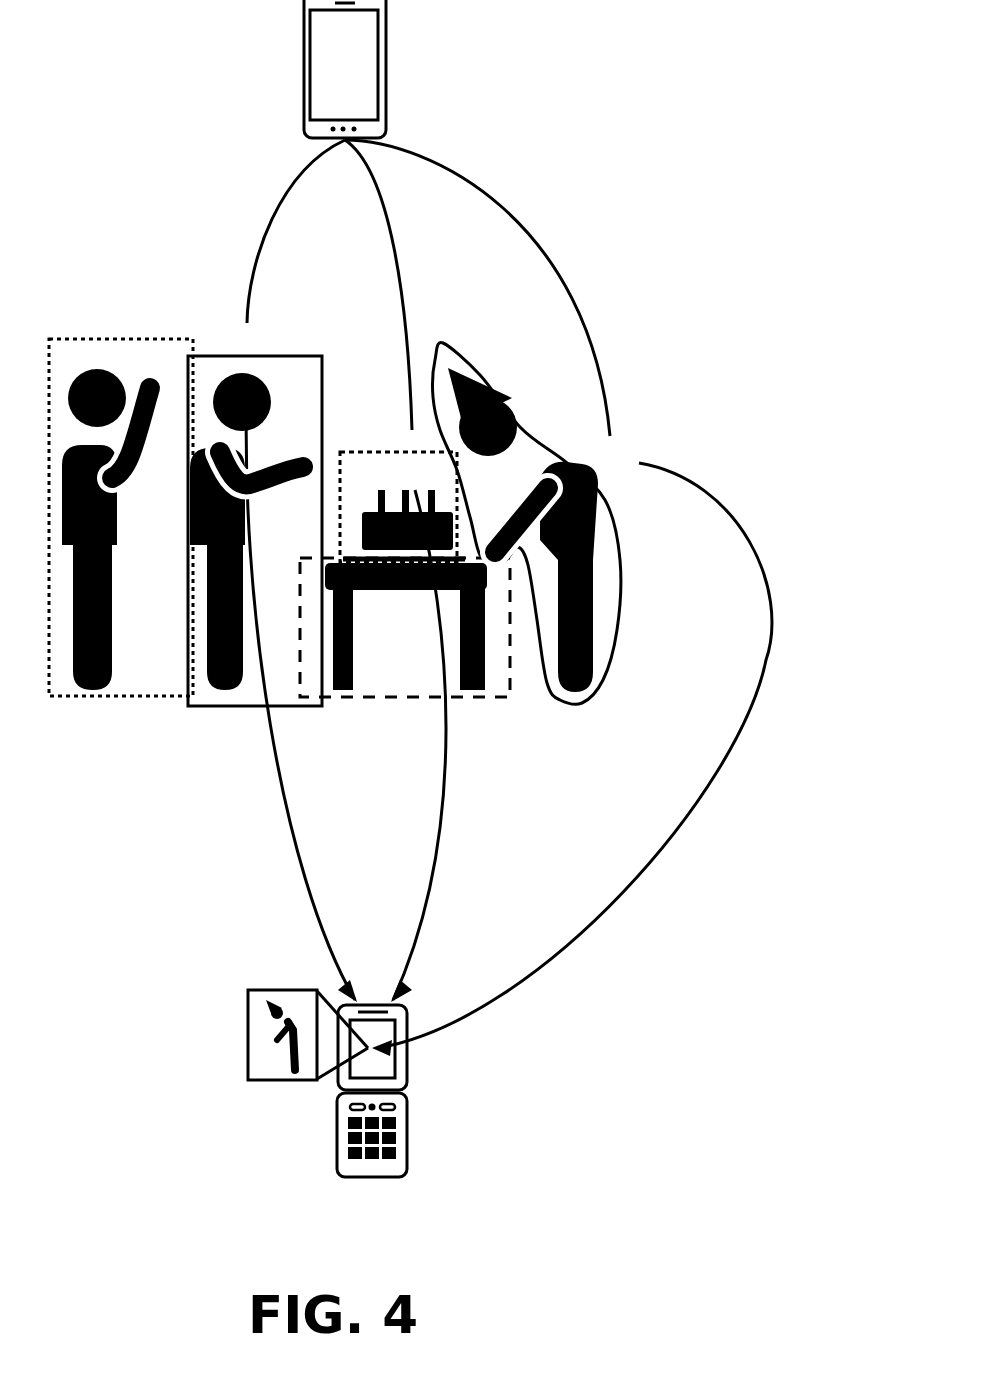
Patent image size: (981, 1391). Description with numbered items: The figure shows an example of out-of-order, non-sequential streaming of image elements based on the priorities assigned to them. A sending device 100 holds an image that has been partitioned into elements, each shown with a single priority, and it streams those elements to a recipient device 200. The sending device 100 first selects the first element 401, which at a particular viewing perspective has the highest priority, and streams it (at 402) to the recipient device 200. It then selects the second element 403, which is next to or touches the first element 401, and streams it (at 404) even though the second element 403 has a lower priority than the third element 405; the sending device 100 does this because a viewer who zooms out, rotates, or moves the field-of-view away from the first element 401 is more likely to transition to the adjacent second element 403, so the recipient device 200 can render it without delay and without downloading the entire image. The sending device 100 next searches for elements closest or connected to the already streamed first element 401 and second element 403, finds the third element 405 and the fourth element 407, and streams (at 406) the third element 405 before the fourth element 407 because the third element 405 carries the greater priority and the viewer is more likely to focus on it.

The sending device 100 is at (387, 67).
The recipient device 200 is at (372, 1177).
The first element 401 is at (598, 703).
The streaming of first element 402 is at (594, 475).
The second element 403 is at (323, 308).
The streaming of second element 404 is at (399, 470).
The third element 405 is at (118, 339).
The streaming of third element 406 is at (231, 363).
The fourth element 407 is at (377, 697).